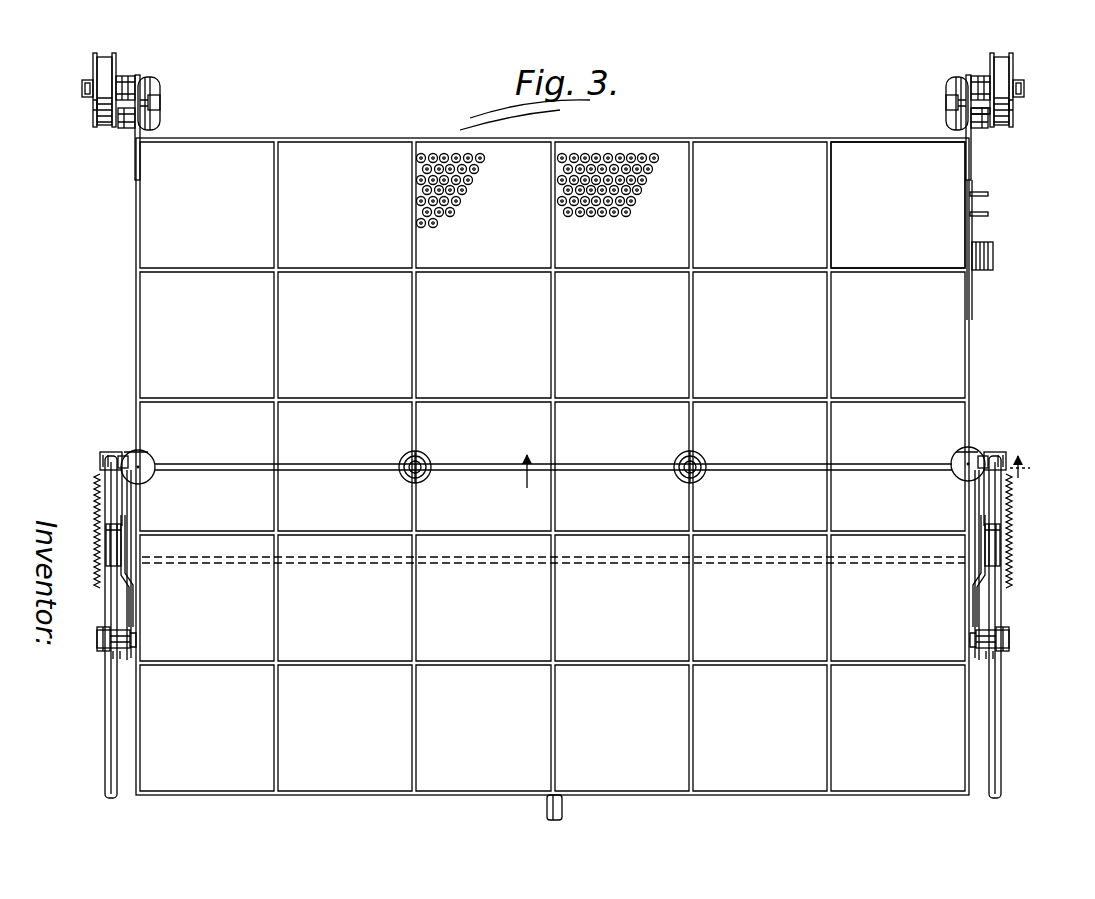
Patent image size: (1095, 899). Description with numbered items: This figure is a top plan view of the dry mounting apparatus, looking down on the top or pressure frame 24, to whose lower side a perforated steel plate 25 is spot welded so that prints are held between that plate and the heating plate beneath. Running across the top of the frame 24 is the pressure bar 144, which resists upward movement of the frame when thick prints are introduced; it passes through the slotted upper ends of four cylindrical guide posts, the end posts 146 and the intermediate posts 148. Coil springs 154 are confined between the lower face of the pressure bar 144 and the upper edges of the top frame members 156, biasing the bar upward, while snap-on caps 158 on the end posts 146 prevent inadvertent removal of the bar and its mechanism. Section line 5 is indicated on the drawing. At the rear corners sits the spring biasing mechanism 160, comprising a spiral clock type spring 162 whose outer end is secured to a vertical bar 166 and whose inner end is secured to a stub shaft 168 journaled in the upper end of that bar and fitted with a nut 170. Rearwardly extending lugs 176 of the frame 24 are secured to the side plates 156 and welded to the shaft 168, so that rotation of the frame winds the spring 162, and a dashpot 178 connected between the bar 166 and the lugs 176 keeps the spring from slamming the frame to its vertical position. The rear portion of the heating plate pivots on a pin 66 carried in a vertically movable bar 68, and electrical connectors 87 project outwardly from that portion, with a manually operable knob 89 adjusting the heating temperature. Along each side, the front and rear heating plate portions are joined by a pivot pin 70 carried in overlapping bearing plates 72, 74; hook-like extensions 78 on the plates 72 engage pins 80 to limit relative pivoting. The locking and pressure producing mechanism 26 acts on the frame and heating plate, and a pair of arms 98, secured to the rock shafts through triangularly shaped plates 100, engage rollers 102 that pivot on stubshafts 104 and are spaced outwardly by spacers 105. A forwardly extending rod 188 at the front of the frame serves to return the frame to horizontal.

The top or pressure frame 24 is at (735, 130).
The perforated steel plate 25 is at (768, 161).
The locking and pressure producing mechanism 26 is at (97, 480).
The section line 5- 5 is at (775, 476).
The pivot pin 66 is at (994, 120).
The vertically movable bar 68 is at (124, 128).
The pivot pin 70 is at (115, 566).
The bearing plate 72 is at (134, 614).
The bearing plate 74 is at (120, 513).
The hook-like extensions 78 is at (126, 525).
The pins 80 is at (138, 552).
The electrical connectors 87 is at (990, 216).
The manually operable knob 89 is at (987, 267).
The arms 98 is at (104, 732).
The triangularly shaped plates 100 is at (101, 508).
The rollers 102 is at (115, 651).
The stubshaft 104 is at (110, 632).
The spacers 105 is at (124, 644).
The pressure bar 144 is at (640, 462).
The end guide posts 146 is at (133, 450).
The intermediate guide posts 148 is at (426, 453).
The coil springs 154 is at (402, 476).
The top frame members 156 is at (412, 430).
The caps 158 is at (146, 462).
The spring biasing mechanism 160 is at (153, 76).
The spiral clock type spring 162 is at (110, 64).
The vertical bar 166 is at (130, 82).
The stub shaft 168 is at (80, 88).
The nut 170 is at (92, 100).
The lugs 176 is at (135, 168).
The dashpot 178 is at (158, 98).
The forwardly extending rod 188 is at (565, 812).